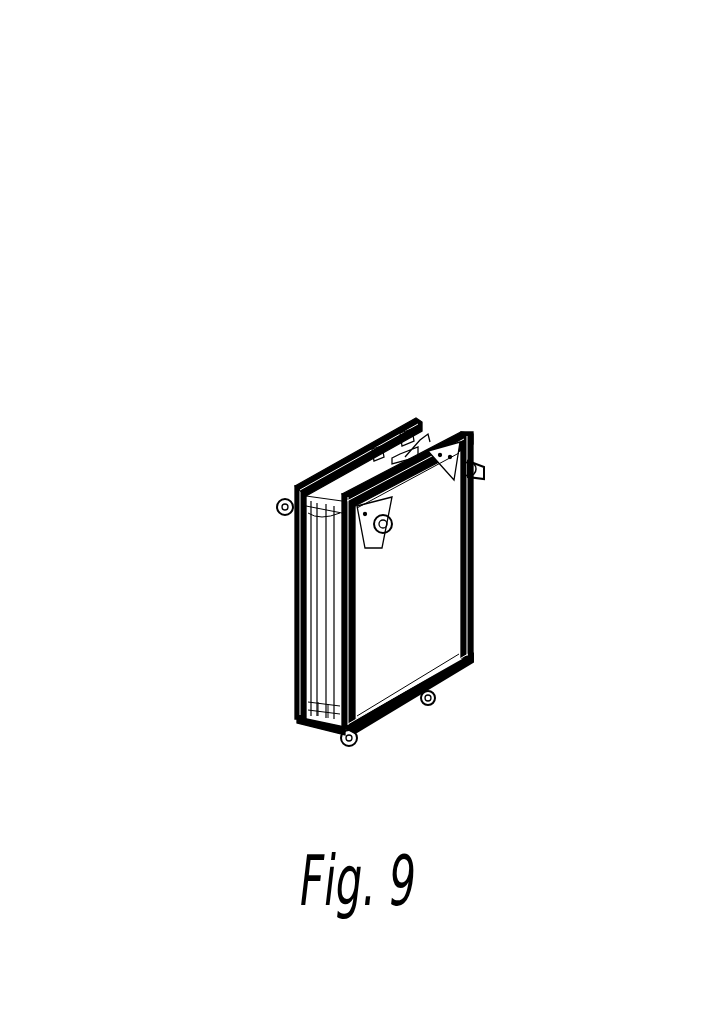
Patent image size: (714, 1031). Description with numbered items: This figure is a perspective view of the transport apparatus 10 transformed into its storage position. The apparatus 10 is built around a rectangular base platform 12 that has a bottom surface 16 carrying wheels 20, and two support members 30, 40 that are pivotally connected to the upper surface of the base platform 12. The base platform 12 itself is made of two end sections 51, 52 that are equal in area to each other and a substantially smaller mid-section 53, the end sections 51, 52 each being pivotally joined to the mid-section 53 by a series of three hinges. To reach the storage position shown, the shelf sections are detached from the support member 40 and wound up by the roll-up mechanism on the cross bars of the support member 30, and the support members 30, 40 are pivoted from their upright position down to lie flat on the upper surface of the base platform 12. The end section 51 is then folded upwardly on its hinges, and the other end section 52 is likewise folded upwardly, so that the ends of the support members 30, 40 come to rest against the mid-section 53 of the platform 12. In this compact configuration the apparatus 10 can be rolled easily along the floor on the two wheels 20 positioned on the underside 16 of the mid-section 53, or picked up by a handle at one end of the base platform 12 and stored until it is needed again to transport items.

The transport apparatus 10 is at (92, 162).
The base platform 12 is at (466, 410).
The bottom surface 16 is at (418, 593).
The wheels 20 is at (283, 500).
The support member 30 is at (300, 533).
The support member 40 is at (338, 645).
The end section 51 is at (351, 478).
The end section 52 is at (472, 527).
The mid-section 53 is at (318, 729).